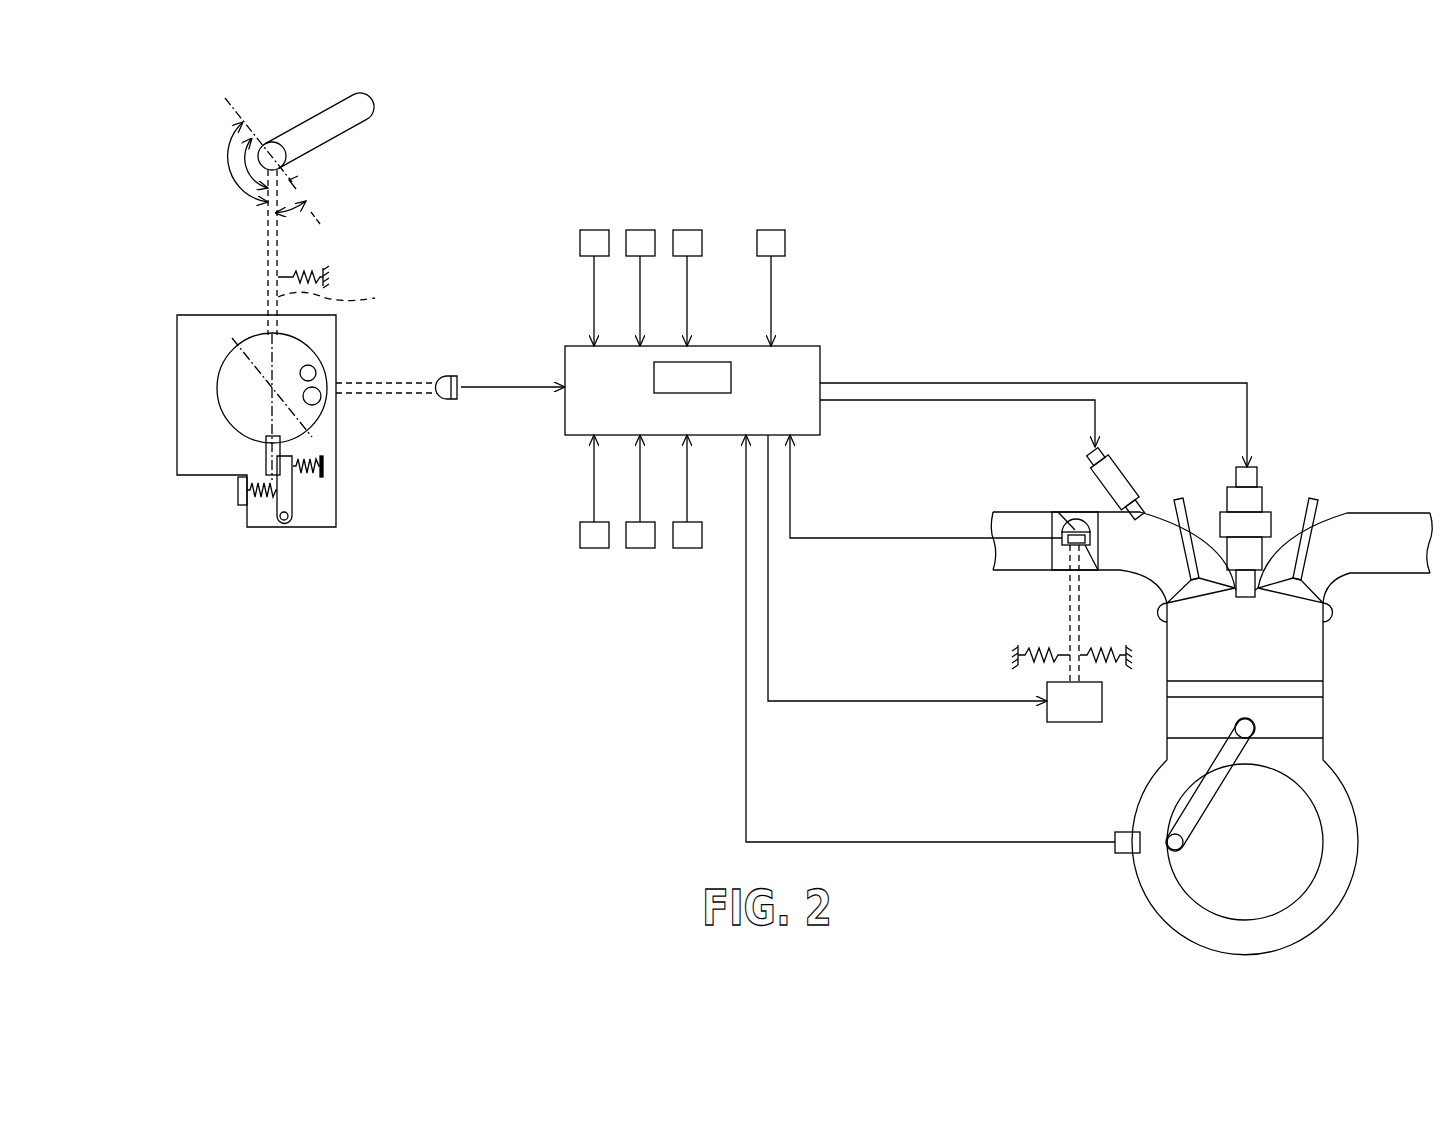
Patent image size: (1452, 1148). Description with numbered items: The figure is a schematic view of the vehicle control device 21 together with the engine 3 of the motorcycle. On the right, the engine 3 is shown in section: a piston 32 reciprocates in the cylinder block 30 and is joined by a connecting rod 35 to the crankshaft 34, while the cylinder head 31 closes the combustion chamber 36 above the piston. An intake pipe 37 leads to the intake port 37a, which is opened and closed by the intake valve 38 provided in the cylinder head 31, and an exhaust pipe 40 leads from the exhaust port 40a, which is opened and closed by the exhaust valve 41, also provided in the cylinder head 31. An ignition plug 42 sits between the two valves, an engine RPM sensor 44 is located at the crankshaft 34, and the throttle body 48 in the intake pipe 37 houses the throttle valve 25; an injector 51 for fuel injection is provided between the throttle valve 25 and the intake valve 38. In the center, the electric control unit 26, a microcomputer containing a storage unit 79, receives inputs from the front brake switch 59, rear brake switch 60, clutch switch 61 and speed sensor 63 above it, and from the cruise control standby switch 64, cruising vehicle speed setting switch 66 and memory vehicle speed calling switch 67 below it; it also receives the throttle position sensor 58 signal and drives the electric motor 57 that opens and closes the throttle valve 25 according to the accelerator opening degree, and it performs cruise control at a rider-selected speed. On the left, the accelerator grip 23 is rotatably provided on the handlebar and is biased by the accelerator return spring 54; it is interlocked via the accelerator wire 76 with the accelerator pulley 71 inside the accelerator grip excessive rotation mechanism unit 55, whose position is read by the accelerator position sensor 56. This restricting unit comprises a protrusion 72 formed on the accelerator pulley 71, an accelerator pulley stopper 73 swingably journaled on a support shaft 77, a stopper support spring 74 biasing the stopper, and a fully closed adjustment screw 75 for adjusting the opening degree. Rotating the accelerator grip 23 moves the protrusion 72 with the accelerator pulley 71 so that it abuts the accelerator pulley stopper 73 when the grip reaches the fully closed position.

The engine 3 is at (1372, 845).
The vehicle control device 21 is at (838, 365).
The accelerator grip 23 is at (374, 106).
The throttle valve 25 is at (1073, 522).
The electric control unit 26 is at (790, 346).
The cylinder block 30 is at (1324, 748).
The cylinder head 31 is at (1332, 603).
The piston 32 is at (1310, 717).
The crankshaft 34 is at (1302, 862).
The connecting rod 35 is at (1185, 800).
The combustion chamber 36 is at (1270, 666).
The intake pipe 37 is at (1152, 582).
The intake port 37a is at (1167, 613).
The intake valve 38 is at (1178, 497).
The exhaust pipe 40 is at (1395, 512).
The exhaust port 40a is at (1330, 625).
The exhaust valve 41 is at (1311, 497).
The ignition plug 42 is at (1250, 466).
The engine RPM sensor 44 is at (1122, 855).
The throttle body 48 is at (1050, 537).
The injector 51 is at (1125, 472).
The accelerator return spring 54 is at (307, 274).
The accelerator grip excessive rotation mechanism unit 55 is at (177, 414).
The accelerator position sensor 56 is at (448, 402).
The electric motor 57 is at (1060, 722).
The throttle position sensor 58 is at (1074, 546).
The front brake switch 59 is at (593, 230).
The rear brake switch 60 is at (639, 230).
The clutch switch 61 is at (686, 230).
The speed sensor 63 is at (312, 114).
The cruise control standby switch 64 is at (593, 548).
The cruising vehicle speed setting switch 66 is at (639, 548).
The memory vehicle speed calling switch 67 is at (686, 548).
The accelerator pulley 71 is at (217, 387).
The protrusion 72 is at (265, 457).
The accelerator pulley stopper 73 is at (295, 510).
The stopper support spring 74 is at (309, 470).
The fully closed adjustment screw 75 is at (243, 507).
The accelerator wire 76 is at (340, 299).
The support shaft 77 is at (284, 522).
The storage unit 79 is at (713, 362).